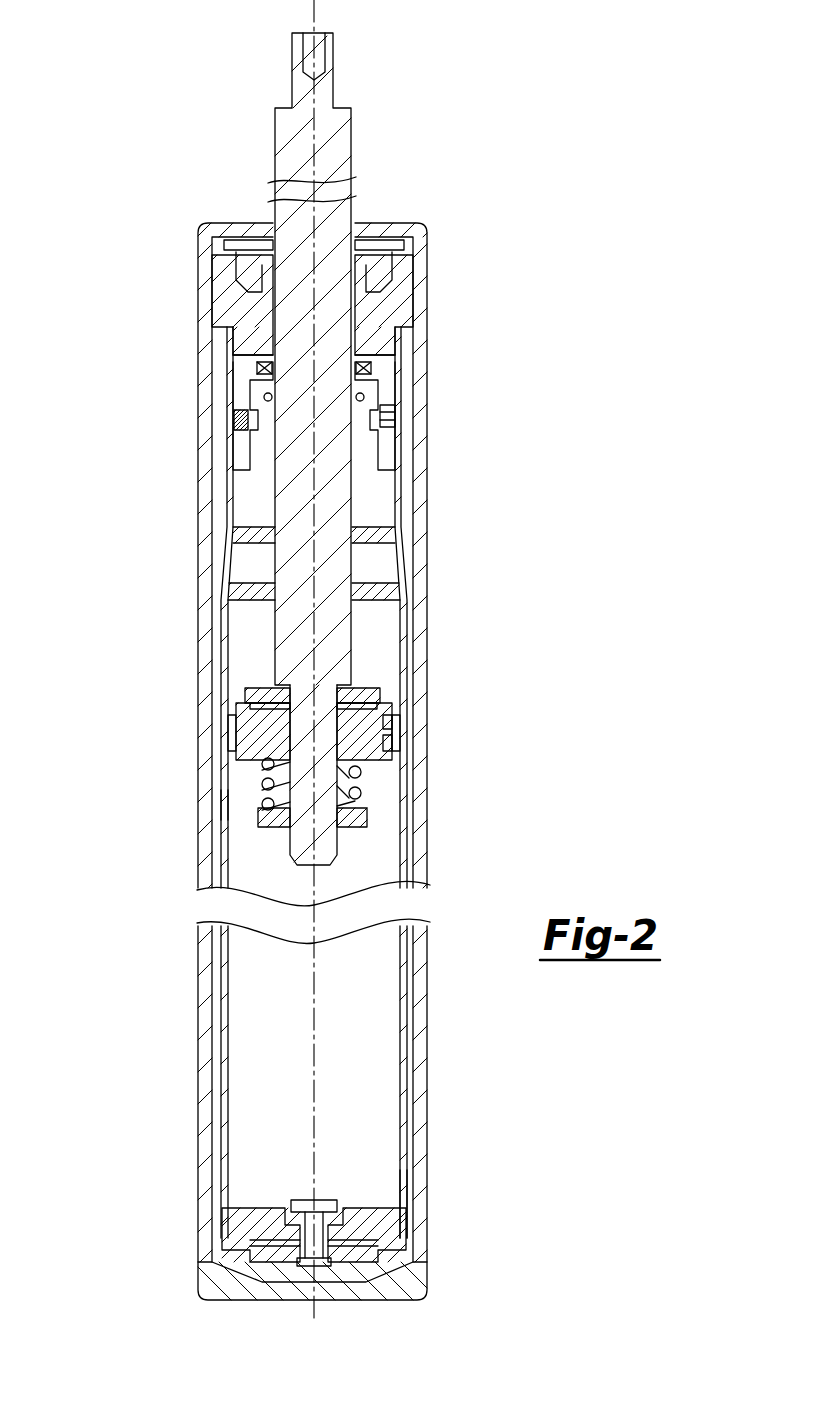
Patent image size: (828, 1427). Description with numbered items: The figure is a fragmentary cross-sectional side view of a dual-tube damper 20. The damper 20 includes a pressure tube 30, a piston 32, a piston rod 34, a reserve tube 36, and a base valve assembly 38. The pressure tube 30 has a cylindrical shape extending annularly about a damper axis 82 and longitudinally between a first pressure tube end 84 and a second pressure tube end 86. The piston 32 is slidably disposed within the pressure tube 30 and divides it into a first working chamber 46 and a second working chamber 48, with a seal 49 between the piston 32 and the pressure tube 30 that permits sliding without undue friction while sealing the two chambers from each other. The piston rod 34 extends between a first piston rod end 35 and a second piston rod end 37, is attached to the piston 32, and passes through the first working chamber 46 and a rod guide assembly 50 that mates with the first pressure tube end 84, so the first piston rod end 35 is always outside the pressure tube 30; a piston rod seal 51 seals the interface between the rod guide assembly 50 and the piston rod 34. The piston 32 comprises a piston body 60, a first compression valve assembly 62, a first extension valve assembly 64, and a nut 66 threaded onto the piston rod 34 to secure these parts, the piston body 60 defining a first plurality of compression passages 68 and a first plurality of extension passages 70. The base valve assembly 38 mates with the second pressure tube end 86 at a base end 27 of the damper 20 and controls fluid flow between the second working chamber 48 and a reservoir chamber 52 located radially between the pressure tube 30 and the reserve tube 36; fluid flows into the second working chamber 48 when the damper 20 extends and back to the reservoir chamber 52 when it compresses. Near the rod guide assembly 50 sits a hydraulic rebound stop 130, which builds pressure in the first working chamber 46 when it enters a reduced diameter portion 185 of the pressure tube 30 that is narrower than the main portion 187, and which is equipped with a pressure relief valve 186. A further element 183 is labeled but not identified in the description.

The damper 20 is at (571, 198).
The base end 27 is at (428, 1275).
The pressure tube 30 is at (415, 1086).
The piston 32 is at (218, 726).
The piston rod 34 is at (340, 157).
The first piston rod end 35 is at (332, 33).
The reserve tube 36 is at (423, 364).
The second piston rod end 37 is at (332, 862).
The base valve assembly 38 is at (245, 1194).
The first working chamber 46 is at (262, 653).
The second working chamber 48 is at (266, 882).
The seal 49 is at (395, 728).
The rod guide assembly 50 is at (420, 283).
The piston rod seal 51 is at (240, 293).
The reservoir chamber 52 is at (220, 515).
The piston body 60 is at (263, 732).
The first compression valve assembly 62 is at (388, 705).
The first extension valve assembly 64 is at (265, 766).
The nut 66 is at (290, 825).
The first plurality of compression passages 68 is at (393, 742).
The first plurality of extension passages 70 is at (247, 699).
The damper axis 82 is at (313, 12).
The first pressure tube end 84 is at (232, 337).
The second pressure tube end 86 is at (410, 1187).
The hydraulic rebound stop 130 is at (416, 419).
The sealing ring 183 is at (368, 372).
The reduced diameter portion 185 is at (232, 462).
The pressure relief valve 186 is at (228, 423).
The main portion 187 is at (222, 805).